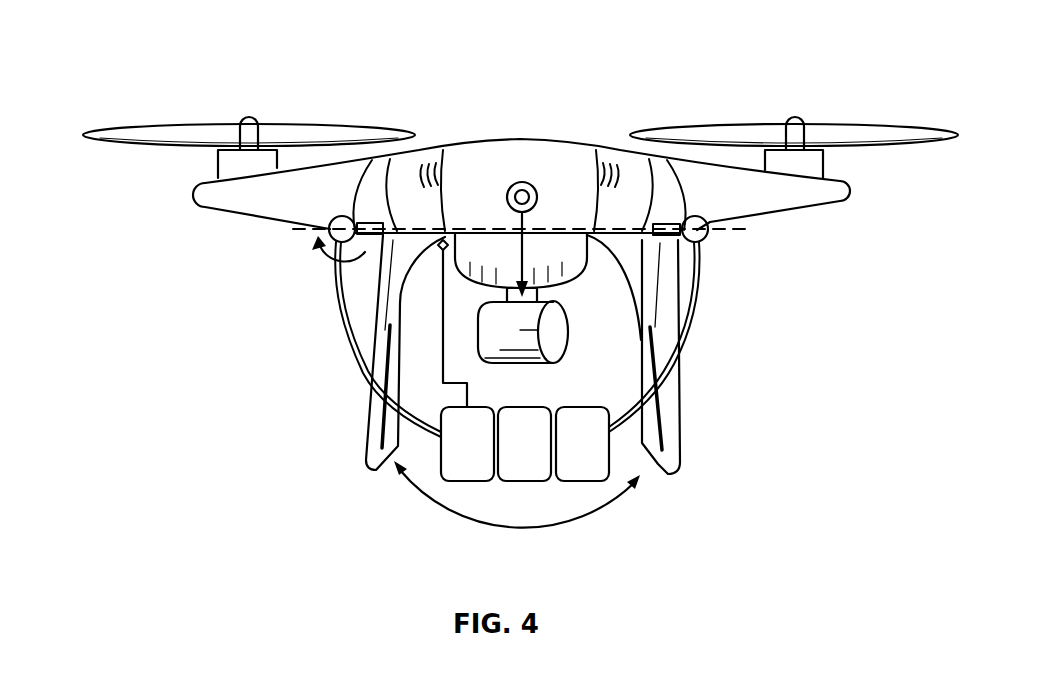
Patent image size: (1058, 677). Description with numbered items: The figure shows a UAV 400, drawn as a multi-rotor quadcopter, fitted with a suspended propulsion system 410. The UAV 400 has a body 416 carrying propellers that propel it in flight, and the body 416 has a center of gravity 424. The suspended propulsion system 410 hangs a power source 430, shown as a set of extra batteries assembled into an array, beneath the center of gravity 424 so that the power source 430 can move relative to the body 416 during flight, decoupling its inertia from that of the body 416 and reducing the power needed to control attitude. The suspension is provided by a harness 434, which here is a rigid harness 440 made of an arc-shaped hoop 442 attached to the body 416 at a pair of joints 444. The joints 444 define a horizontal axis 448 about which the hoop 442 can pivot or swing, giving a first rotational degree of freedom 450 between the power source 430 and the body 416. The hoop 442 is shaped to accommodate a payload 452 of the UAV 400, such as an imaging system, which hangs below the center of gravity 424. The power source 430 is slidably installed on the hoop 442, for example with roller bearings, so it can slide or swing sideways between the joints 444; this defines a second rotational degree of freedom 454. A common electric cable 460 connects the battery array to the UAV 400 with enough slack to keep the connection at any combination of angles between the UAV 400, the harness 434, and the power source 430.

The UAV 400 is at (136, 34).
The suspended propulsion system 410 is at (750, 370).
The body 416 is at (545, 152).
The center of gravity 424 is at (522, 182).
The power source 430 is at (600, 476).
The harness 434 is at (343, 327).
The rigid harness 440 is at (692, 327).
The arc-shaped hoop 442 is at (358, 370).
The joints 444 is at (331, 209).
The horizontal axis 448 is at (305, 250).
The first rotational degree of freedom 450 is at (343, 216).
The payload 452 is at (555, 337).
The second rotational degree of freedom 454 is at (460, 515).
The electric cable 460 is at (437, 368).